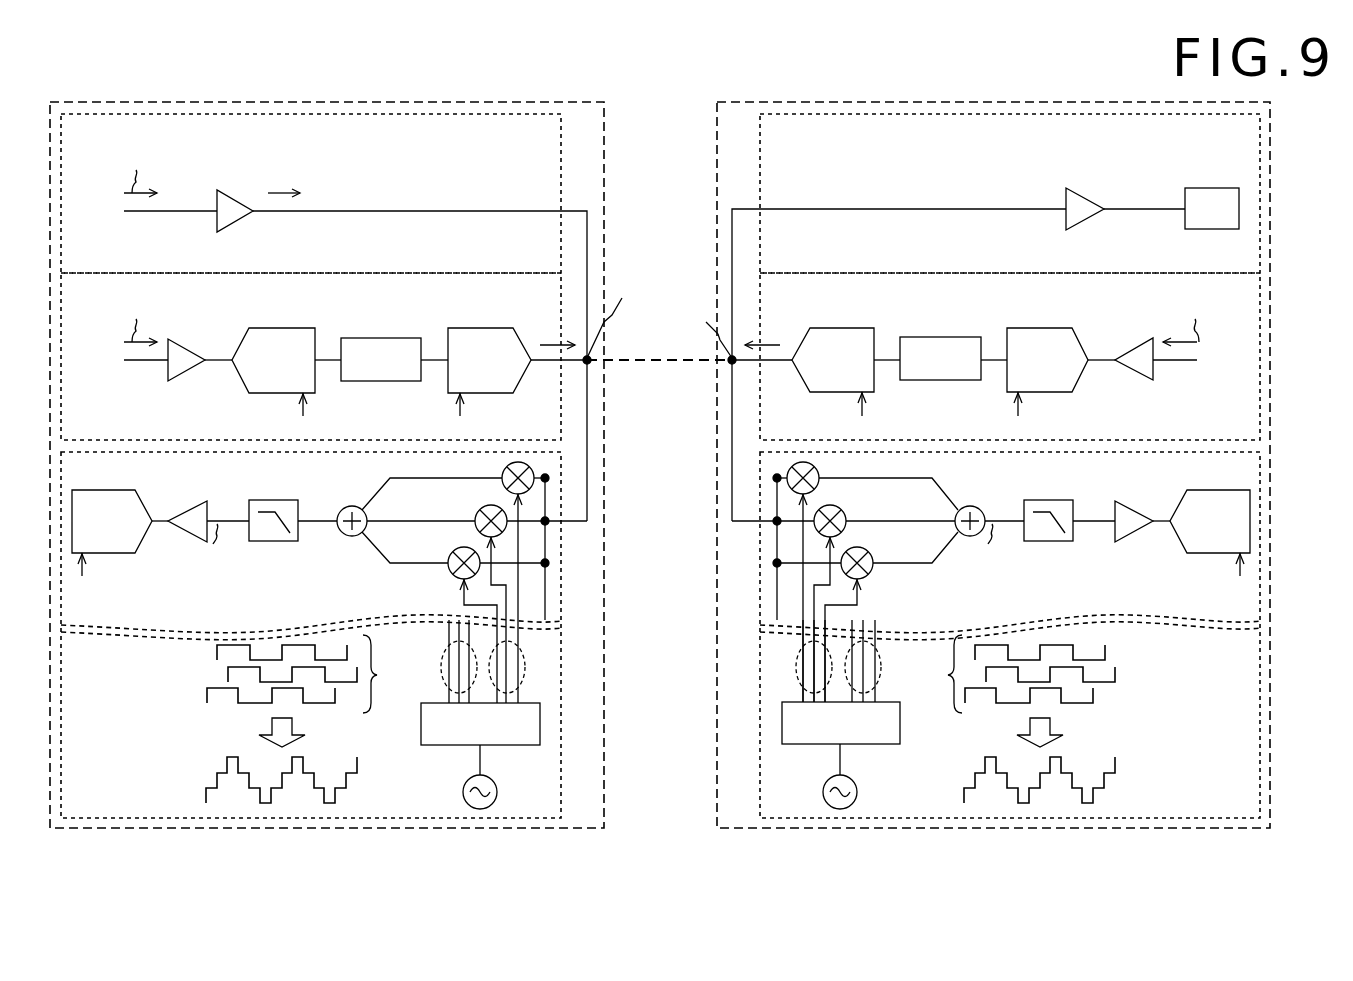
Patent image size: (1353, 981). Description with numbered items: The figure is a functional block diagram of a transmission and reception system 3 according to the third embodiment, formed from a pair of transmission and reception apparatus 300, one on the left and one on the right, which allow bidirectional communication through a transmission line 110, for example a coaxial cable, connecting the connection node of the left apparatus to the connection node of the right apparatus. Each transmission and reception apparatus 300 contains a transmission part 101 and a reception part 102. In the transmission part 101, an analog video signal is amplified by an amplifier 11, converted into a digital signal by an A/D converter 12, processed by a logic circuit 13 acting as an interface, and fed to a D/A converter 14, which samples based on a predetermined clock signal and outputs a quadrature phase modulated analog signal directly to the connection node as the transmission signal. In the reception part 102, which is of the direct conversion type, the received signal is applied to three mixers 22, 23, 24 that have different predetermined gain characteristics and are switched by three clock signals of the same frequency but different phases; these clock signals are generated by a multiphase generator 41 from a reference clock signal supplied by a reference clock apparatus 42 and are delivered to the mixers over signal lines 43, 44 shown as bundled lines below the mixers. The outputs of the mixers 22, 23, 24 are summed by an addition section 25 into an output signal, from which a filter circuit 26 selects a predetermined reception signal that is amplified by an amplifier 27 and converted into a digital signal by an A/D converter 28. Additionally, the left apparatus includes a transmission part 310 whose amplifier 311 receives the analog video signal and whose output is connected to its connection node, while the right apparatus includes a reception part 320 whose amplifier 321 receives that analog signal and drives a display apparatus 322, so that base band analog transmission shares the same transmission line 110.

The transmission and reception system 3 is at (654, 72).
The transmission and reception apparatus 300 is at (310, 102).
The transmission part 310 is at (480, 273).
The amplifier 311 is at (236, 233).
The reception part 320 is at (838, 273).
The amplifier 321 is at (1085, 232).
The display apparatus 322 is at (1210, 186).
The transmission part 101 is at (105, 440).
The amplifier 11 is at (188, 344).
The A/D converter 12 is at (272, 326).
The logic circuit 13 is at (380, 326).
The D/A converter 14 is at (486, 326).
The transmission line 110 is at (658, 365).
The reception part 102 is at (105, 820).
The mixer 22 is at (816, 470).
The mixer 23 is at (842, 511).
The mixer 24 is at (869, 554).
The addition section 25 is at (968, 505).
The filter circuit 26 is at (1048, 500).
The amplifier 27 is at (1133, 501).
The A/D converter 28 is at (1220, 554).
The multiphase generator 41 is at (792, 744).
The reference clock apparatus 42 is at (853, 782).
The signal lines 43 is at (797, 652).
The pulse signal group 44 is at (878, 651).